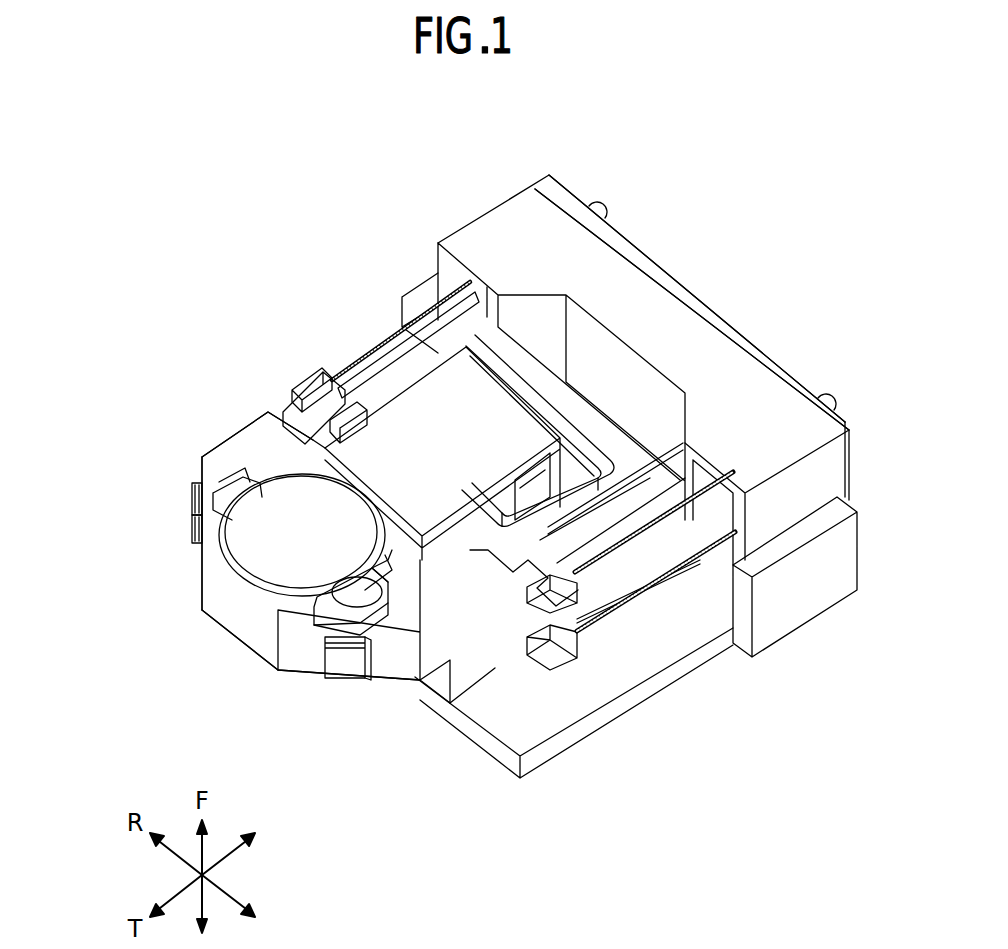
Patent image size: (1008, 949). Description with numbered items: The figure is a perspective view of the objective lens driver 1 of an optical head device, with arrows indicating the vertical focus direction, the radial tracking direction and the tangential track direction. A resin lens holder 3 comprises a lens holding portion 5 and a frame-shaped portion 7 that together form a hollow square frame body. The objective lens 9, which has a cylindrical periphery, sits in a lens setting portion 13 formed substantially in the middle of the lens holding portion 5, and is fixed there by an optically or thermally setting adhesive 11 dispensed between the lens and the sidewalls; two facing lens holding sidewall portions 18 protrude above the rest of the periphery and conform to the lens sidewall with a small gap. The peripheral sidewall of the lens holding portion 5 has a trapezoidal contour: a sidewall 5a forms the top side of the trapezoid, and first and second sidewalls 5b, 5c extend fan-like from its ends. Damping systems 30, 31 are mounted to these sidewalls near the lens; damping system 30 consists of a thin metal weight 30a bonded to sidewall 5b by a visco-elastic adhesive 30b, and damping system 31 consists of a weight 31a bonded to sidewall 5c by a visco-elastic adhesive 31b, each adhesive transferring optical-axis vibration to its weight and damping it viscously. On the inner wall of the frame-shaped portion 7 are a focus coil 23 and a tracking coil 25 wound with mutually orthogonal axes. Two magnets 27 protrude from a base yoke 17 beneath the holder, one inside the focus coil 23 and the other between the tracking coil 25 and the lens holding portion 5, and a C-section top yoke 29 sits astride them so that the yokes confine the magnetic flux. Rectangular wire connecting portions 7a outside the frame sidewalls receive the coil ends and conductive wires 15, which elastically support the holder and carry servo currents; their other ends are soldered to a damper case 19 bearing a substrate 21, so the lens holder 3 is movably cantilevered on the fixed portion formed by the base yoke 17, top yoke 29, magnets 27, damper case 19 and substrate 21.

The objective lens driver 1 is at (327, 186).
The lens holder 3 is at (197, 350).
The lens holding portion 5 is at (233, 449).
The sidewall 5a is at (235, 625).
The first sidewall 5b is at (304, 673).
The second sidewall 5c is at (200, 470).
The frame-shaped portion 7 is at (290, 395).
The wire connecting portion 7a is at (312, 388).
The objective lens 9 is at (243, 562).
The adhesive 11 is at (250, 480).
The lens setting portion 13 is at (380, 615).
The conductive wire 15 is at (372, 350).
The base yoke 17 is at (594, 722).
The lens holding sidewall portion 18 is at (382, 500).
The damper case 19 is at (506, 213).
The substrate 21 is at (690, 290).
The focus coil 23 is at (590, 452).
The tracking coil 25 is at (545, 505).
The magnet 27 is at (507, 550).
The top yoke 29 is at (471, 447).
The damping system 30 is at (363, 717).
The weight 30a is at (343, 676).
The visco-elastic adhesive 30b is at (372, 660).
The damping system 31 is at (121, 526).
The weight 31a is at (190, 532).
The visco-elastic adhesive 31b is at (197, 545).